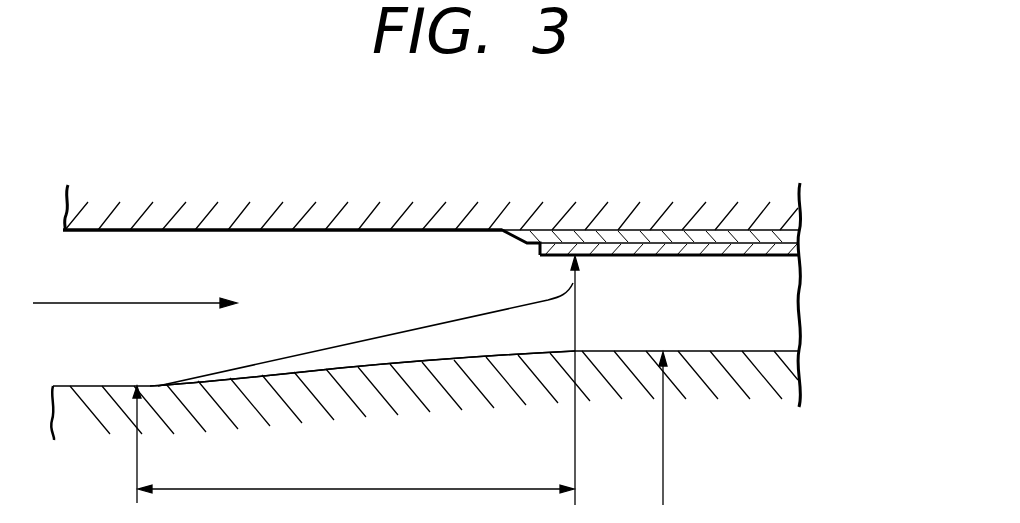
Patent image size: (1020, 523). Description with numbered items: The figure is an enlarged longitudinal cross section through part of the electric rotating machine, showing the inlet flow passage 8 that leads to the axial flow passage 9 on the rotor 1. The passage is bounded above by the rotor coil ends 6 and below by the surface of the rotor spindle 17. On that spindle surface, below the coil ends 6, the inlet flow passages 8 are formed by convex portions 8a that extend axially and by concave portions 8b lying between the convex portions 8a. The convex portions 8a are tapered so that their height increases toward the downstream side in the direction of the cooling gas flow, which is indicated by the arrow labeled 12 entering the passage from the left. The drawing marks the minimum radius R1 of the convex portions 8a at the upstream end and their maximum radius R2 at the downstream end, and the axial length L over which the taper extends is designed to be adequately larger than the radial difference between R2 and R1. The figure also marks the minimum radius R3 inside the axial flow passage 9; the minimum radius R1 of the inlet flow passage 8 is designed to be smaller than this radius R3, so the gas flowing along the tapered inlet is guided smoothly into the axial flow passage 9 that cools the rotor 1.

The rotor 1 is at (843, 365).
The rotor coil ends 6 is at (230, 210).
The inlet flow passage 8 is at (330, 330).
The convex portions 8a is at (410, 330).
The concave portions 8b is at (498, 343).
The axial flow passage 9 is at (643, 295).
The fuel flow direction 12 is at (77, 303).
The rotor spindle 17 is at (460, 378).
The minimum radius of the convex portions R1 is at (157, 444).
The maximum radius of the convex portions R2 is at (594, 380).
The minimum radius inside the axial flow passages R3 is at (682, 428).
The axial length of the tapered convex portions L is at (356, 474).